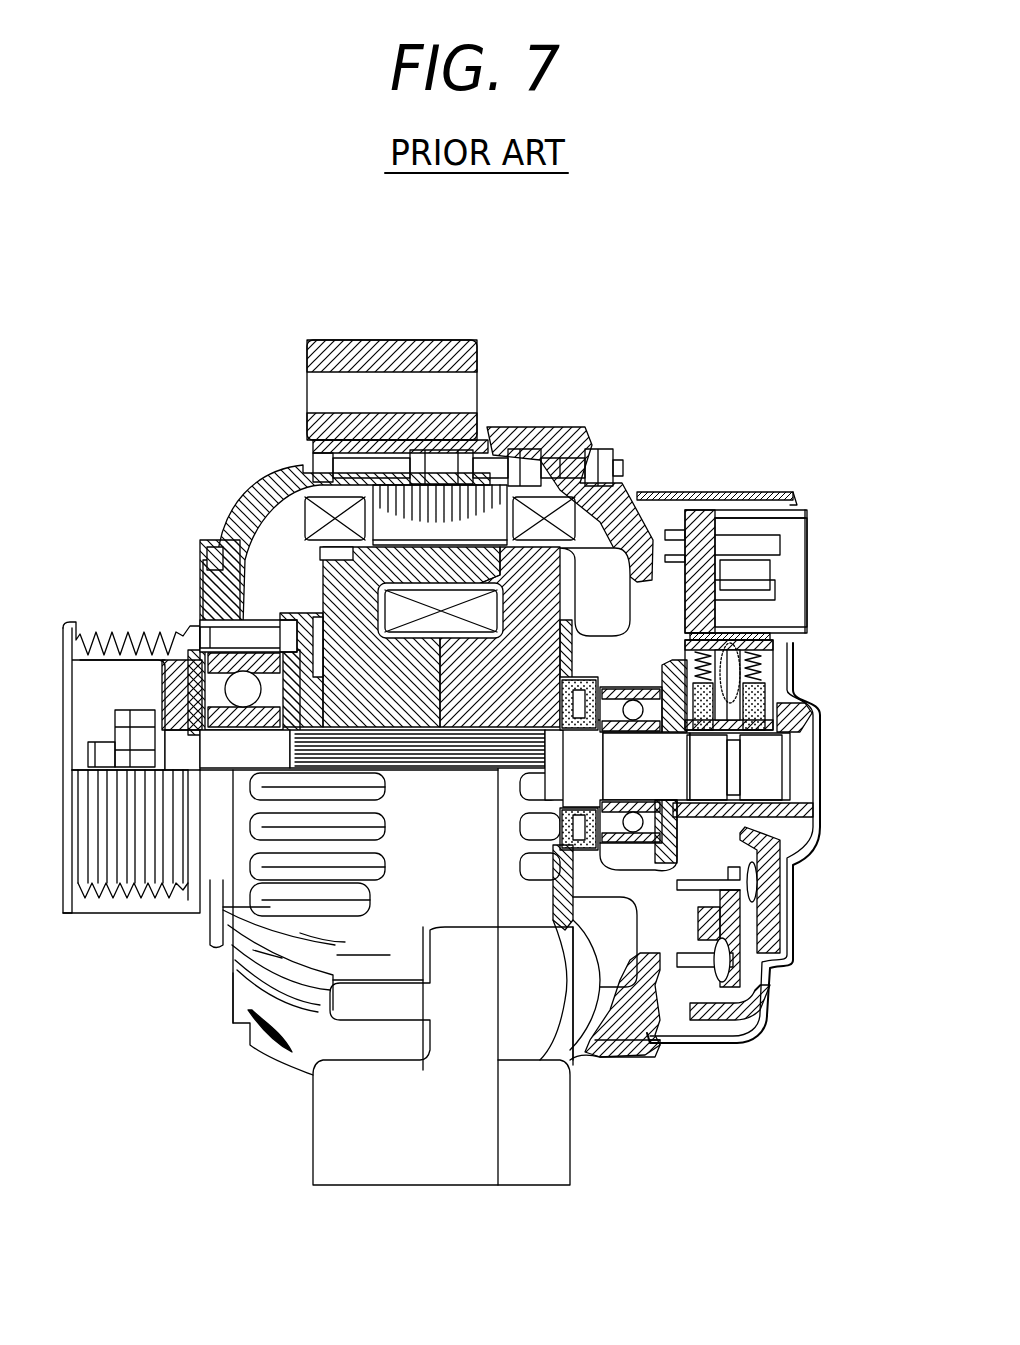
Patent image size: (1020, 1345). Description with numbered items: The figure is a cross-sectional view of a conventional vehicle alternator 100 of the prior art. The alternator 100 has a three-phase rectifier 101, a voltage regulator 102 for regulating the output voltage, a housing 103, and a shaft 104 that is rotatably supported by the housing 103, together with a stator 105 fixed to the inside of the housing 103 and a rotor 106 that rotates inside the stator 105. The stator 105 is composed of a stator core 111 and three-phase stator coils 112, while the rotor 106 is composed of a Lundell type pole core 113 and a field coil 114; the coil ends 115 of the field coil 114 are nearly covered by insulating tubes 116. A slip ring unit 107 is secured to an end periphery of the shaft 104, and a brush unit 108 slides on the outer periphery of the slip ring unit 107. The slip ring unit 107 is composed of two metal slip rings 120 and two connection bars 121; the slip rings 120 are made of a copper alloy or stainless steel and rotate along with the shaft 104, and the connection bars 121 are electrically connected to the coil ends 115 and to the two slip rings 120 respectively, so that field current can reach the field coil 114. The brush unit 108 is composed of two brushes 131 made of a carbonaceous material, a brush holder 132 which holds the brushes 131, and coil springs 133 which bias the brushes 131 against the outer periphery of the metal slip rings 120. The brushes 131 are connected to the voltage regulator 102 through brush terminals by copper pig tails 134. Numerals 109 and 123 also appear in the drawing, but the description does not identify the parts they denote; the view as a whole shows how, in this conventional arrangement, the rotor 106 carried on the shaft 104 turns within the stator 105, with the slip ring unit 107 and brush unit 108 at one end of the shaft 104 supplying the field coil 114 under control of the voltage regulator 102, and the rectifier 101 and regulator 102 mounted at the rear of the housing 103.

The alternator 100 is at (232, 393).
The three-phase rectifier 101 is at (747, 1003).
The voltage regulator 102 is at (707, 517).
The housing 103 is at (278, 1052).
The shaft 104 is at (190, 770).
The stator 105 is at (295, 520).
The rotor 106 is at (583, 523).
The slip ring unit 107 is at (792, 792).
The brush unit 108 is at (782, 653).
The rear frame wall 109 is at (623, 1057).
The stator core 111 is at (493, 492).
The three-phase stator coils 112 is at (547, 503).
The Lundell type pole core 113 is at (403, 703).
The field coil 114 is at (480, 622).
The coil ends 115 is at (587, 833).
The insulating tubes 116 is at (567, 880).
The metal slip rings 120 is at (712, 762).
The connection bars 121 is at (563, 830).
The seal 123 is at (587, 688).
The brushes 131 is at (740, 712).
The brush holder 132 is at (757, 635).
The coil springs 133 is at (770, 665).
The copper pig tails 134 is at (705, 715).